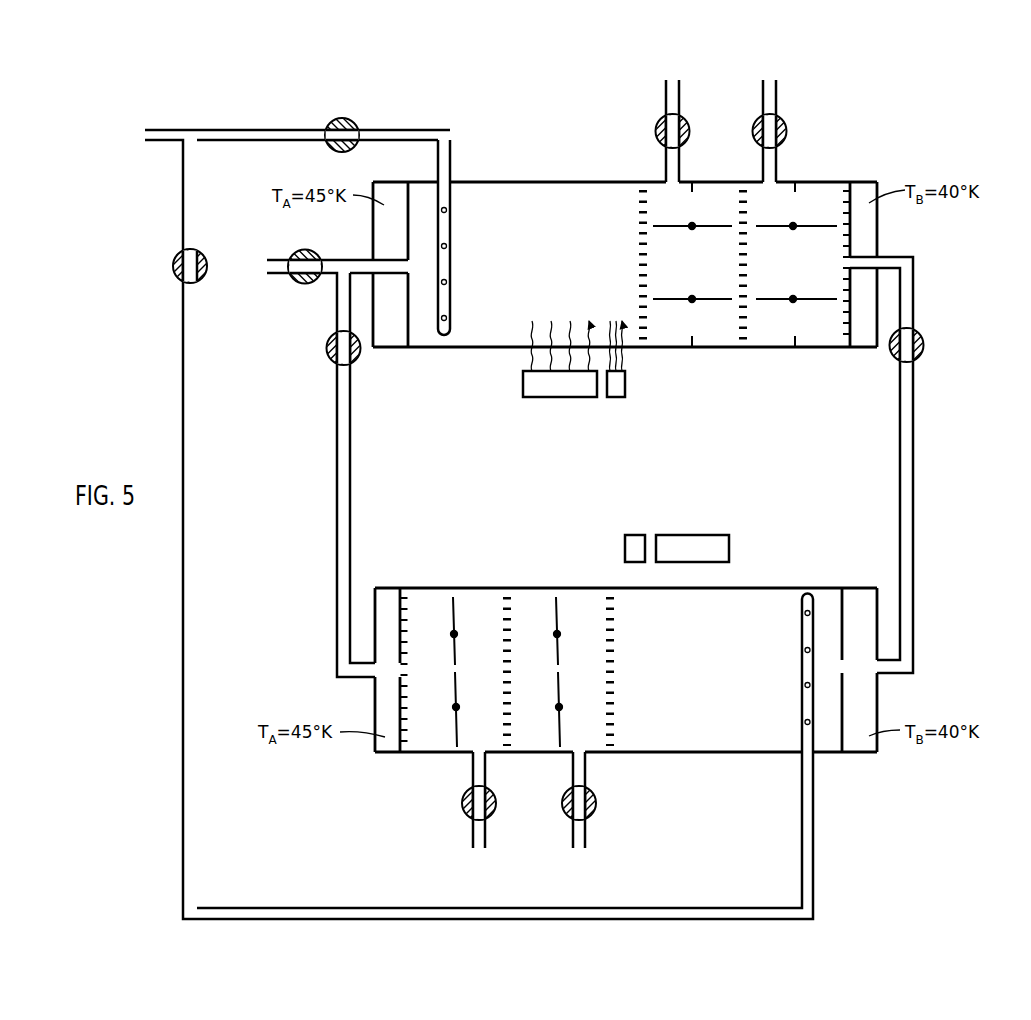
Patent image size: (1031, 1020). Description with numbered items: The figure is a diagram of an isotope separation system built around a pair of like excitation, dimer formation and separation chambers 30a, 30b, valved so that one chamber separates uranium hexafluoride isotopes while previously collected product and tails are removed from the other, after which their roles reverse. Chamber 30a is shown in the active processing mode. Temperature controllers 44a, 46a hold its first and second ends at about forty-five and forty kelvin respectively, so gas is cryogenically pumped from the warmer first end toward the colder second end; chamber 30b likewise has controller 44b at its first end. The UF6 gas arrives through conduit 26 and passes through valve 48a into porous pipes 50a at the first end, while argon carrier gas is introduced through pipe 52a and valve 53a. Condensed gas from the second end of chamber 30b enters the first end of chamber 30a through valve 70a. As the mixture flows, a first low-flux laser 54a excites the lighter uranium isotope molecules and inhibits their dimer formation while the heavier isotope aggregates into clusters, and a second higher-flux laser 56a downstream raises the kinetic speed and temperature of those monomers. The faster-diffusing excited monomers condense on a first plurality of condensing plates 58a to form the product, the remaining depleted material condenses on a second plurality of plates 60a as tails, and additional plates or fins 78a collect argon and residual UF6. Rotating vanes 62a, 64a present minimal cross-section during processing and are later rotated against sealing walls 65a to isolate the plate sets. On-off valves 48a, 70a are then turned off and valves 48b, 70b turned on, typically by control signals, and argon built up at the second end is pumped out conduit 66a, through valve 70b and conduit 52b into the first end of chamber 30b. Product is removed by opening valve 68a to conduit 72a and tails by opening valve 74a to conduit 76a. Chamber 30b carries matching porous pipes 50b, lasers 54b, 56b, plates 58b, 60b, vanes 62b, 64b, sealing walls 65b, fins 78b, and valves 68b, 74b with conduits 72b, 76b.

The conduit 26 is at (168, 129).
The excitation, dimer formation and separation chamber 30a is at (494, 177).
The excitation, dimer formation and separation chamber 30b is at (757, 578).
The temperature controller 44a is at (388, 340).
The temperature controller 44b is at (864, 593).
The temperature controller 46a is at (860, 337).
The valve 48a is at (342, 90).
The valve 48b is at (201, 277).
The porous pipes 50a is at (447, 318).
The porous pipes 50b is at (804, 721).
The pipe 52a is at (274, 274).
The conduit 52b is at (915, 640).
The valve 53a is at (297, 252).
The first low-flux laser 54a is at (556, 392).
The first low-flux laser 54b is at (685, 540).
The second higher-flux laser 56a is at (617, 392).
The second higher-flux laser 56b is at (634, 538).
The first plurality of condensing plates 58a is at (654, 330).
The first plurality of condensing plates 58b is at (598, 604).
The second plurality of condensing plates 60a is at (752, 330).
The second plurality of condensing plates 60b is at (494, 604).
The rotating vanes 62a is at (665, 233).
The rotating vanes 62b is at (554, 647).
The rotating vanes 64a is at (767, 233).
The rotating vanes 64b is at (451, 647).
The sealing walls 65a is at (690, 187).
The sealing walls 65b is at (458, 600).
The conduit 66a is at (908, 270).
The valve 68a is at (684, 146).
The valve 68b is at (571, 793).
The valve 70a is at (331, 362).
The valve 70b is at (919, 358).
The conduit 72a is at (680, 95).
The conduit 72b is at (572, 841).
The valve 74a is at (788, 131).
The valve 74b is at (470, 793).
The conduit 76a is at (777, 95).
The conduit 76b is at (472, 841).
The plates or fins 78a is at (844, 308).
The plates or fins 78b is at (410, 627).